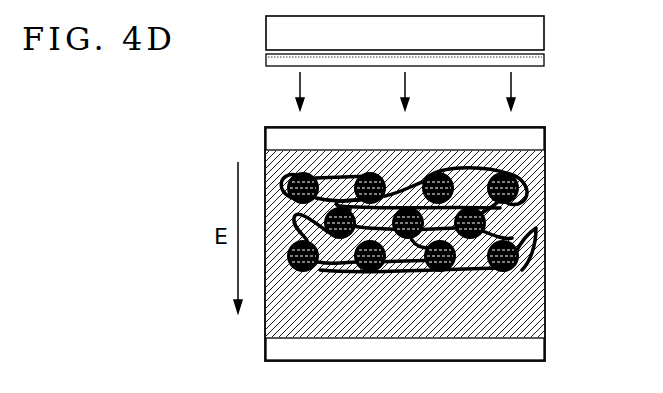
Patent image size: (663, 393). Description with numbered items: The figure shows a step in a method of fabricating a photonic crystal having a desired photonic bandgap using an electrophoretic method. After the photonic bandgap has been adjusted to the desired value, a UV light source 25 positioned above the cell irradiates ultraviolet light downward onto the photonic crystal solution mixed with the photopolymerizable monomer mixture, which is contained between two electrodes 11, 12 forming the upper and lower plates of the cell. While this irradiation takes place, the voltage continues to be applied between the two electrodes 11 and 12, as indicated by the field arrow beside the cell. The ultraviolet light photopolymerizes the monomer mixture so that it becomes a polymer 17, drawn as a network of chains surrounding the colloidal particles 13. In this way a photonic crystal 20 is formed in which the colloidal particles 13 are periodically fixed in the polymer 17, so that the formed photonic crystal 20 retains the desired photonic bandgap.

The electrode 11 is at (532, 139).
The electrode 12 is at (527, 349).
The colloidal particles 13 is at (523, 182).
The polymer 17 is at (517, 213).
The photonic crystal 20 is at (560, 270).
The UV light source 25 is at (545, 27).